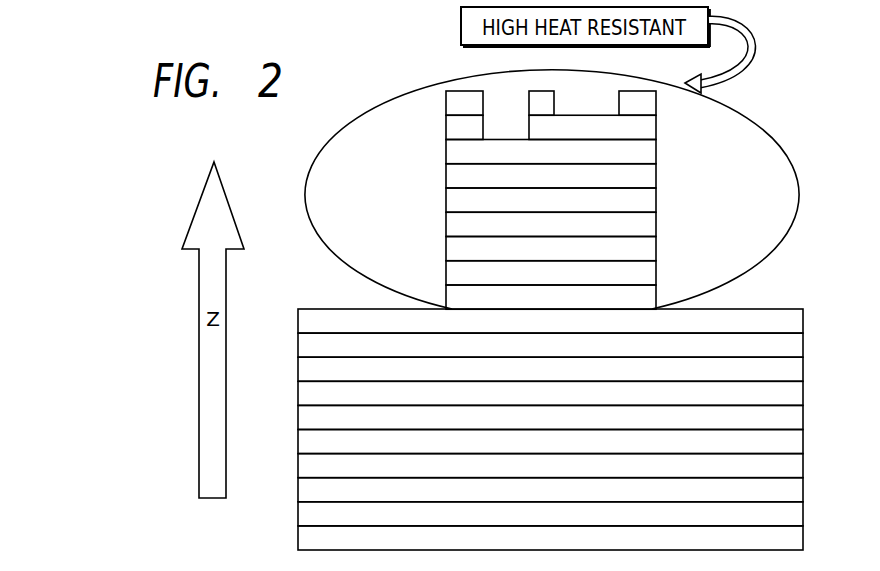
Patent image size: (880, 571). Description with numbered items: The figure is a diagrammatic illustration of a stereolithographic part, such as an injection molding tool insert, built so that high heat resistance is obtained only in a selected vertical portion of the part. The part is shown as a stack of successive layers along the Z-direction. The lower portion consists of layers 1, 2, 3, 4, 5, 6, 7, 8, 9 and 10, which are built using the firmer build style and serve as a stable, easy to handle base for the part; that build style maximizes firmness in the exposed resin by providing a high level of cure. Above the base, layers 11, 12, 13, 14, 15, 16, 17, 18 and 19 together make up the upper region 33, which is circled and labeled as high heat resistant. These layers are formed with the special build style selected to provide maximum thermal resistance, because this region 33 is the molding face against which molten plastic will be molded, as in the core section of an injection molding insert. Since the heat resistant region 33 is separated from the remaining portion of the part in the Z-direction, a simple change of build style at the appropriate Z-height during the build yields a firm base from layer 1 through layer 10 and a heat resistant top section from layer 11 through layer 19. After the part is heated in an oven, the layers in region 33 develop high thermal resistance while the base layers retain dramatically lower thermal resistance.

The layer 1 is at (550, 539).
The layer 2 is at (550, 515).
The layer 3 is at (550, 491).
The layer 4 is at (550, 467).
The layer 5 is at (550, 443).
The layer 6 is at (550, 418).
The layer 7 is at (550, 394).
The layer 8 is at (550, 370).
The layer 9 is at (550, 346).
The layer 10 is at (550, 322).
The layer 11 is at (551, 297).
The layer 12 is at (551, 273).
The layer 13 is at (551, 249).
The layer 14 is at (551, 224).
The layer 15 is at (551, 200).
The layer 16 is at (551, 176).
The layer 17 is at (551, 152).
The layer 18 is at (551, 127).
The layer 19 is at (551, 103).
The high heat resistant region 33 is at (776, 137).